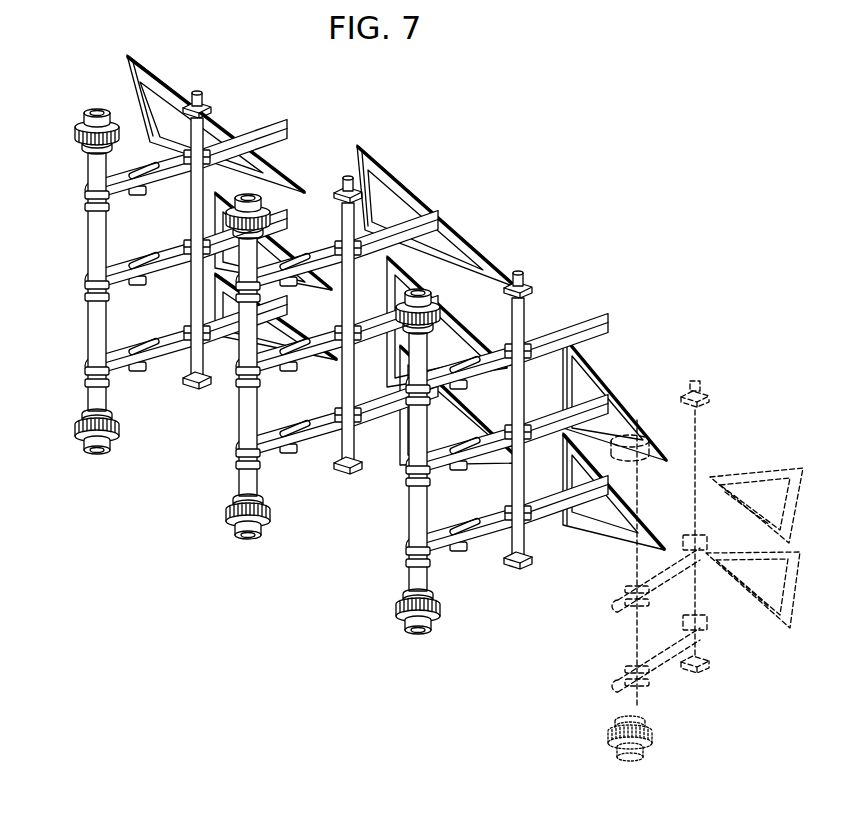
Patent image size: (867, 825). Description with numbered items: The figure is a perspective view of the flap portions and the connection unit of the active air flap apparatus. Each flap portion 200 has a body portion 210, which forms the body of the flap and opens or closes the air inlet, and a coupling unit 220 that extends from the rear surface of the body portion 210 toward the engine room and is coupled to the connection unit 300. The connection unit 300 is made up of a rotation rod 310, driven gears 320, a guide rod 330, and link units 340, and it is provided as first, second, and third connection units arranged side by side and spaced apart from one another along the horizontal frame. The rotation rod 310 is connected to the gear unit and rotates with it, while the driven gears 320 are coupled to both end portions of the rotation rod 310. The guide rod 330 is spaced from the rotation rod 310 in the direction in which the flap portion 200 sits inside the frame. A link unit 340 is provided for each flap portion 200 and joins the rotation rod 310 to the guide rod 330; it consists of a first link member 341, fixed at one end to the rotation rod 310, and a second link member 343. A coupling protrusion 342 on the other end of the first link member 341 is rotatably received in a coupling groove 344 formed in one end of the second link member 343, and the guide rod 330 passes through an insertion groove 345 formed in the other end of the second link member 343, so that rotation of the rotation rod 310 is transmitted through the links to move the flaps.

The flap portion 200 is at (585, 160).
The body portion 210 is at (415, 188).
The coupling unit 220 is at (420, 237).
The connection unit 300 is at (252, 703).
The rotation rod 310 is at (242, 426).
The driven gear 320 is at (226, 518).
The guide rod 330 is at (343, 218).
The link unit 340 is at (372, 528).
The first link member 341 is at (272, 462).
The coupling protrusion 342 is at (242, 408).
The second link member 343 is at (337, 440).
The coupling groove 344 is at (248, 465).
The insertion groove 345 is at (303, 405).